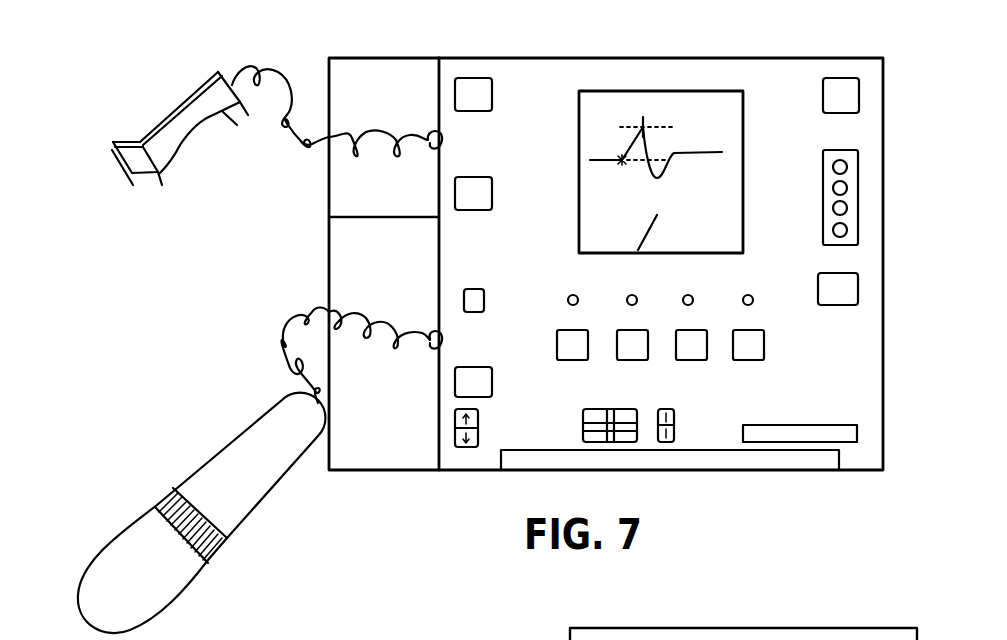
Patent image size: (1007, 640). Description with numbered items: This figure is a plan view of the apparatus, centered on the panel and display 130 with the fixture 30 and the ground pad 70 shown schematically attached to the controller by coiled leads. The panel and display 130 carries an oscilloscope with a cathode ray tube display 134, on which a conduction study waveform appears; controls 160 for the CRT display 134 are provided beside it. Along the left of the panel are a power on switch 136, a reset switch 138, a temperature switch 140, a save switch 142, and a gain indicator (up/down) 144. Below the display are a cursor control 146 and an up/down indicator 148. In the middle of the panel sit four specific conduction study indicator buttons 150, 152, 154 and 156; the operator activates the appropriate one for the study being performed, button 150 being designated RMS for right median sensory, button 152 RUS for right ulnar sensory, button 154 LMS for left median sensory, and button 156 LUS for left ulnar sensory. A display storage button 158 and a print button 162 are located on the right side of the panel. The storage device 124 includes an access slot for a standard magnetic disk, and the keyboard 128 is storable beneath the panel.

The fixture 30 is at (177, 110).
The ground pad 70 is at (166, 598).
The storage device 124 is at (786, 425).
The keyboard 128 is at (610, 460).
The panel and display 130 is at (779, 100).
The cathode ray tube display 134 is at (673, 105).
The power on switch 136 is at (480, 78).
The reset switch 138 is at (483, 177).
The temperature switch 140 is at (474, 289).
The save switch 142 is at (482, 367).
The gain indicator (up/down) 144 is at (478, 420).
The cursor control 146 is at (625, 409).
The up/down indicator 148 is at (675, 416).
The specific conduction study indicator button 150 is at (583, 330).
The specific conduction study indicator button 152 is at (643, 330).
The specific conduction study indicator button 154 is at (702, 330).
The specific conduction study indicator button 156 is at (758, 330).
The display storage button 158 is at (858, 287).
The controls for the CRT display 160 is at (859, 182).
The print button 162 is at (850, 78).